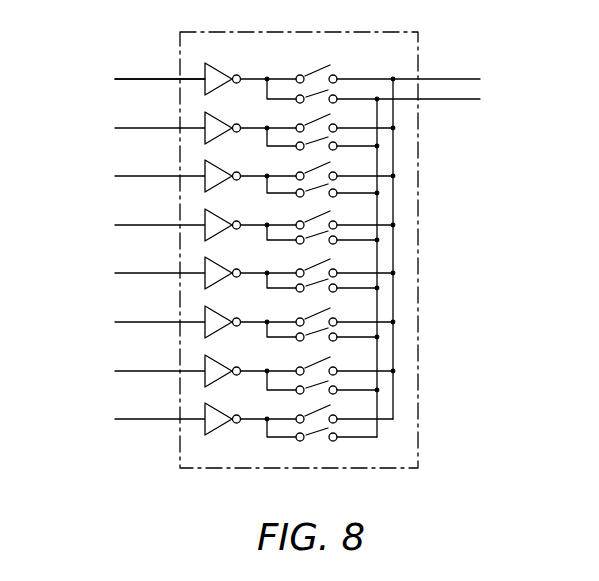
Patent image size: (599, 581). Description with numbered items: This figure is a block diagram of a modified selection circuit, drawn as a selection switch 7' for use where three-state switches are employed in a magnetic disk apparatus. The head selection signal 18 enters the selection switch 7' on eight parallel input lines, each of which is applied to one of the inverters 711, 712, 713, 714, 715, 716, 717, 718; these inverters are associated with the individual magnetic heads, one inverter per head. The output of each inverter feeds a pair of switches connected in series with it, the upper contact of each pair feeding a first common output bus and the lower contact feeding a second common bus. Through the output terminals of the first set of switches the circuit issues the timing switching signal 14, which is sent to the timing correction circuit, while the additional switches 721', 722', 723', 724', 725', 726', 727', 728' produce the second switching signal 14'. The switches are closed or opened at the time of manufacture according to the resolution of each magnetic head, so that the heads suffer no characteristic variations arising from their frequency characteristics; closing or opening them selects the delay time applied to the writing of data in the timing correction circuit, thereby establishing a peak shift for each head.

The selection switch 7' is at (299, 236).
The head selection signal 18 is at (163, 78).
The timing switching signal 14 is at (436, 68).
The switching signal 14' is at (429, 116).
The inverter 711 is at (219, 56).
The inverter 712 is at (219, 105).
The inverter 713 is at (219, 153).
The inverter 714 is at (219, 202).
The inverter 715 is at (219, 250).
The inverter 716 is at (219, 299).
The inverter 717 is at (219, 348).
The inverter 718 is at (219, 396).
The additional switch 721' is at (318, 95).
The additional switch 722' is at (318, 143).
The additional switch 723' is at (318, 190).
The additional switch 724' is at (318, 238).
The additional switch 725' is at (318, 286).
The additional switch 726' is at (318, 335).
The additional switch 727' is at (318, 386).
The additional switch 728' is at (317, 434).